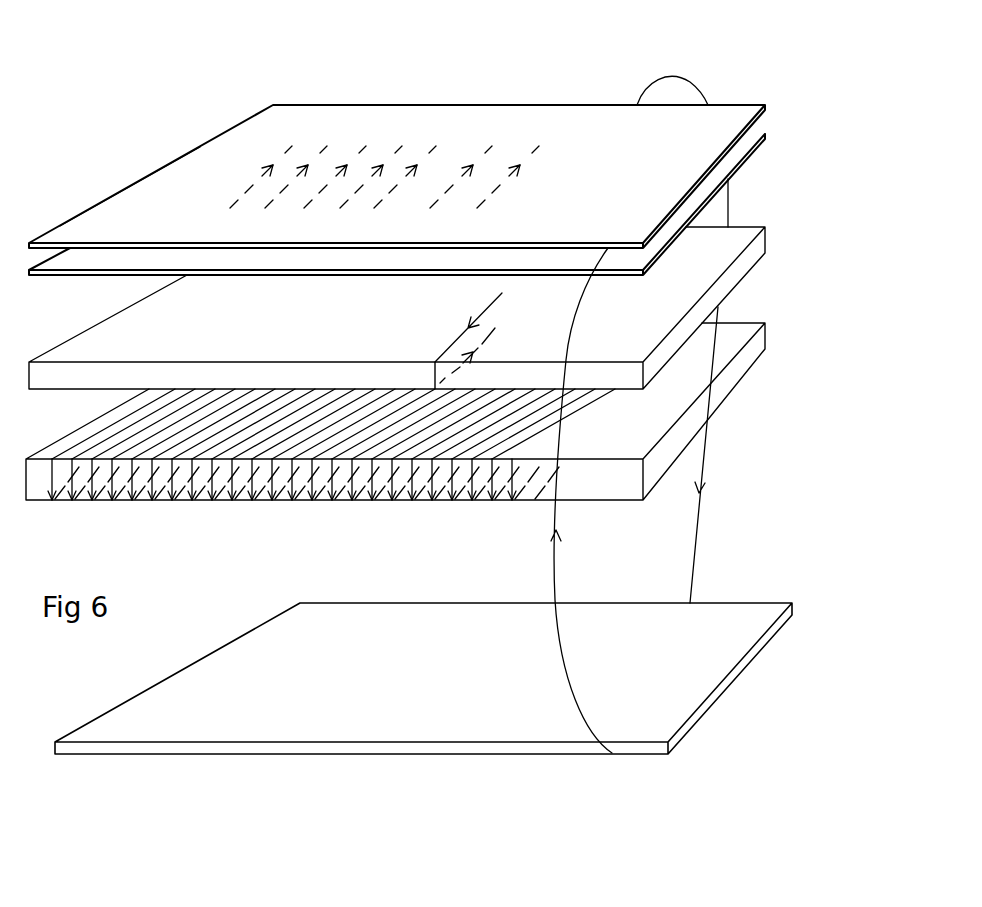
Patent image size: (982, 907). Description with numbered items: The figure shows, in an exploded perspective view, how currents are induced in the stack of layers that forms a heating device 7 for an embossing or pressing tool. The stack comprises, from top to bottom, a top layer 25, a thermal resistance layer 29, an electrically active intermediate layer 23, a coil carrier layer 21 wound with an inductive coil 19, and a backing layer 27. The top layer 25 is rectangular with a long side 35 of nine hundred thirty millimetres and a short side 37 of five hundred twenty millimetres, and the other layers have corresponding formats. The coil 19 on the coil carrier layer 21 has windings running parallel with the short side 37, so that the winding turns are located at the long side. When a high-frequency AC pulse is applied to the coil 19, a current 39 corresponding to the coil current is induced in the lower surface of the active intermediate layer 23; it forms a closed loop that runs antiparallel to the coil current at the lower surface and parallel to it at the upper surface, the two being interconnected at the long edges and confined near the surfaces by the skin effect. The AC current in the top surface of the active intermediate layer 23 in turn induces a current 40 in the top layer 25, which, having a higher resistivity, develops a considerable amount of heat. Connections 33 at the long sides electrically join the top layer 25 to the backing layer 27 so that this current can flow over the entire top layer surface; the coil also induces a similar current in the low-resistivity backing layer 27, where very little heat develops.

The heating device 7 is at (299, 451).
The inductive coil 19 is at (603, 400).
The coil carrier layer 21 is at (435, 398).
The electrically active intermediate layer 23 is at (433, 292).
The top layer 25 is at (397, 140).
The backing layer 27 is at (761, 618).
The thermal resistance layer 29 is at (753, 130).
The connections 33 is at (703, 465).
The long side 35 is at (458, 105).
The short side 37 is at (135, 180).
The current 39 is at (495, 328).
The current 40 is at (493, 205).